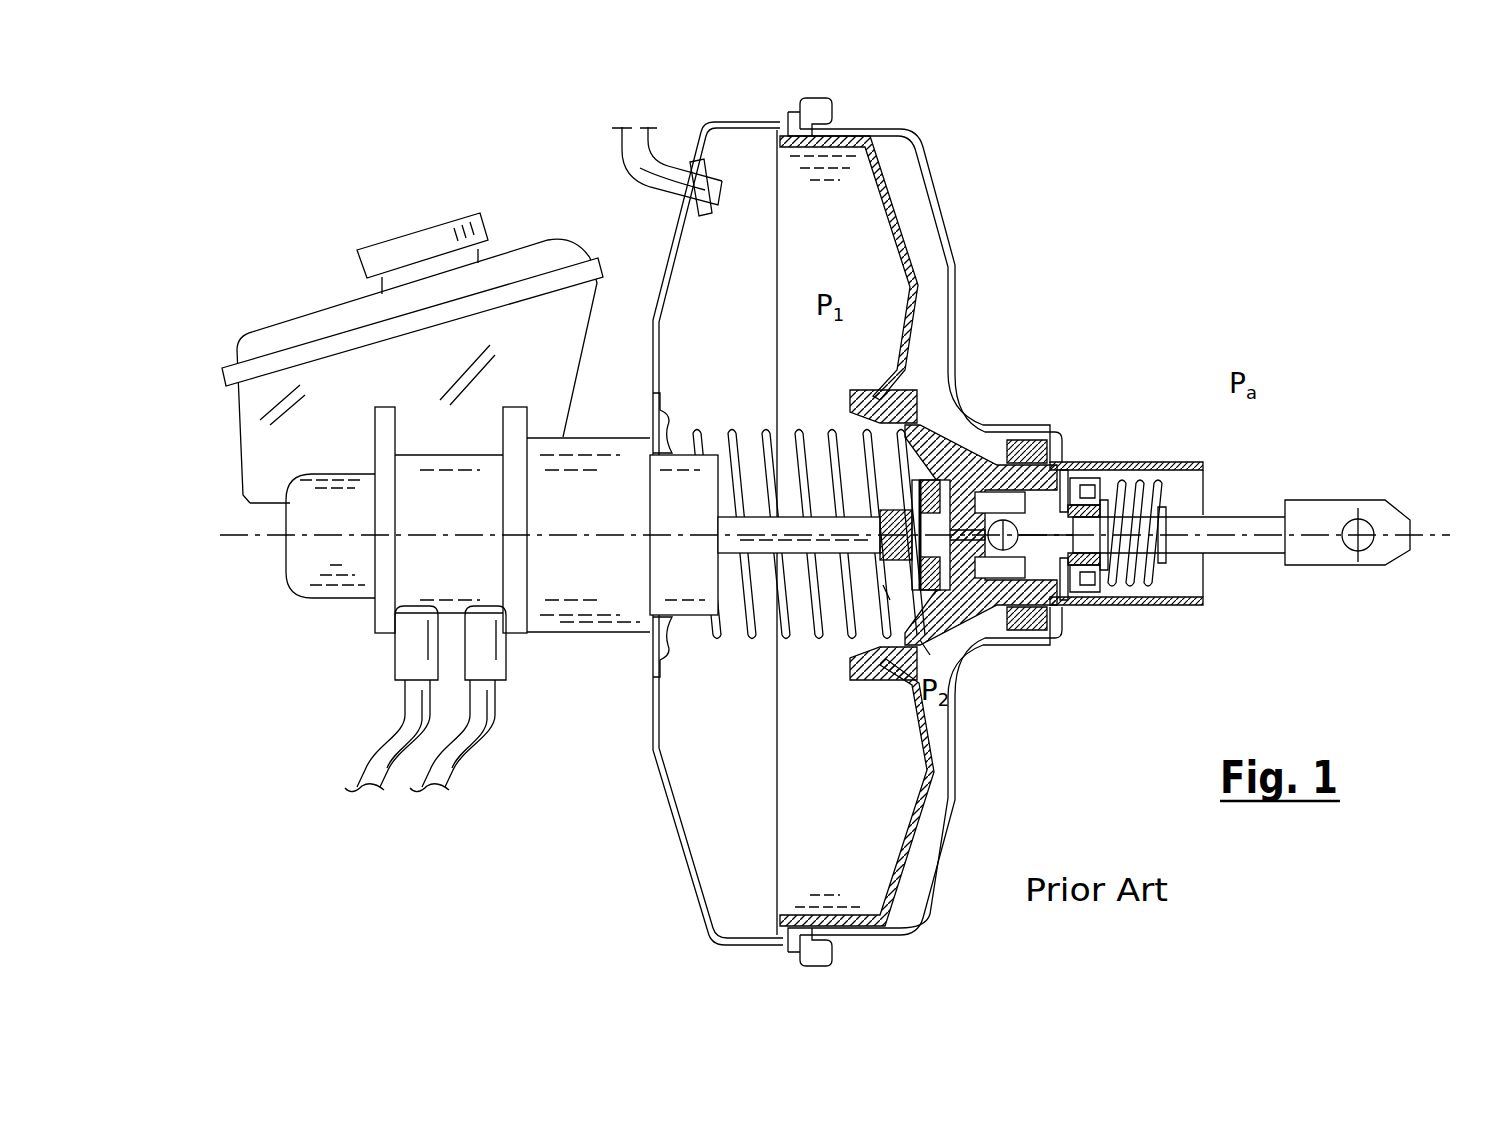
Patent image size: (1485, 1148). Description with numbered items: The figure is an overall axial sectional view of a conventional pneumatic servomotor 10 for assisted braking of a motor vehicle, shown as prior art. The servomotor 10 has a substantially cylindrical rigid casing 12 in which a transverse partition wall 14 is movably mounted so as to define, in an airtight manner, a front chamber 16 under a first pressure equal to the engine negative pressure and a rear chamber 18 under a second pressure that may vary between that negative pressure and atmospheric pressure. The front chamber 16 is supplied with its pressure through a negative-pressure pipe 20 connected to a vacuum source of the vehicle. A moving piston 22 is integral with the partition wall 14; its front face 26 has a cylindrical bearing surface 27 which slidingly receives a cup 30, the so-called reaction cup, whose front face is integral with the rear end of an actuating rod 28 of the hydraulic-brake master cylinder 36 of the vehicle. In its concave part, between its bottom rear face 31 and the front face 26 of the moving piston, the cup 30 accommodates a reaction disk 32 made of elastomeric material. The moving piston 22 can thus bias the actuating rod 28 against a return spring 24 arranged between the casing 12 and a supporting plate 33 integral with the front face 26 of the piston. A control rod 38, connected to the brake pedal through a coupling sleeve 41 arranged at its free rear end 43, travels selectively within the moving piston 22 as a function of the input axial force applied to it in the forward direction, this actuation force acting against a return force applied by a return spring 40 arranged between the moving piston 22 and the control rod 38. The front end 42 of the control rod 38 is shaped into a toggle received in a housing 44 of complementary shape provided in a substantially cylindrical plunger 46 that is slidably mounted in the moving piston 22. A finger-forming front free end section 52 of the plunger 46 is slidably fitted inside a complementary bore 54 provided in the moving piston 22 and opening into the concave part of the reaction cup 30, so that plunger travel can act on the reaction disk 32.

The pneumatic servomotor 10 is at (1150, 278).
The rigid casing 12 is at (958, 348).
The transverse partition wall 14 is at (912, 238).
The front chamber 16 is at (805, 272).
The rear chamber 18 is at (942, 716).
The negative-pressure pipe 20 is at (622, 172).
The moving piston 22 is at (918, 418).
The return spring 24 is at (752, 632).
The front face 26 is at (905, 425).
The cylindrical bearing surface 27 is at (1000, 625).
The actuating rod 28 is at (738, 555).
The cup 30 is at (965, 615).
The bottom rear face 31 is at (883, 585).
The reaction disk 32 is at (893, 503).
The supporting plate 33 is at (930, 655).
The hydraulic-brake master cylinder 36 is at (425, 560).
The control rod 38 is at (1253, 545).
The return spring 40 is at (1140, 605).
The coupling sleeve 41 is at (1317, 518).
The front end 42 is at (1083, 607).
The free rear end 43 is at (1272, 522).
The housing 44 is at (1107, 493).
The plunger 46 is at (1005, 445).
The front free end section 52 is at (862, 612).
The bore 54 is at (903, 497).